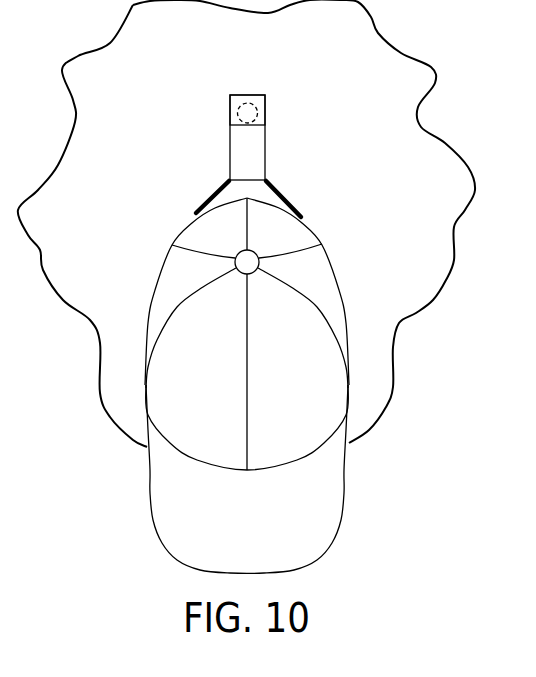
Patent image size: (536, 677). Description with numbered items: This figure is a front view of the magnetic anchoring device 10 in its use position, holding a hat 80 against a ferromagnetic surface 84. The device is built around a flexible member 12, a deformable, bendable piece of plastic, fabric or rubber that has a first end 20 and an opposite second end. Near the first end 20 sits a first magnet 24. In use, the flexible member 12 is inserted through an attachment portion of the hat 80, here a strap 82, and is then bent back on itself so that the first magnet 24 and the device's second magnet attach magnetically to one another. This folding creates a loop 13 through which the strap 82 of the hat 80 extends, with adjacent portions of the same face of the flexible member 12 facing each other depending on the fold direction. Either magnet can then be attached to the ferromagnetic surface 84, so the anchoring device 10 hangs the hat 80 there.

The magnetic anchoring device 10 is at (205, 95).
The flexible member 12 is at (227, 137).
The loop 13 is at (213, 183).
The first end 20 is at (247, 95).
The first magnet 24 is at (258, 113).
The hat 80 is at (378, 263).
The strap 82 is at (288, 198).
The ferromagnetic surface 84 is at (366, 40).